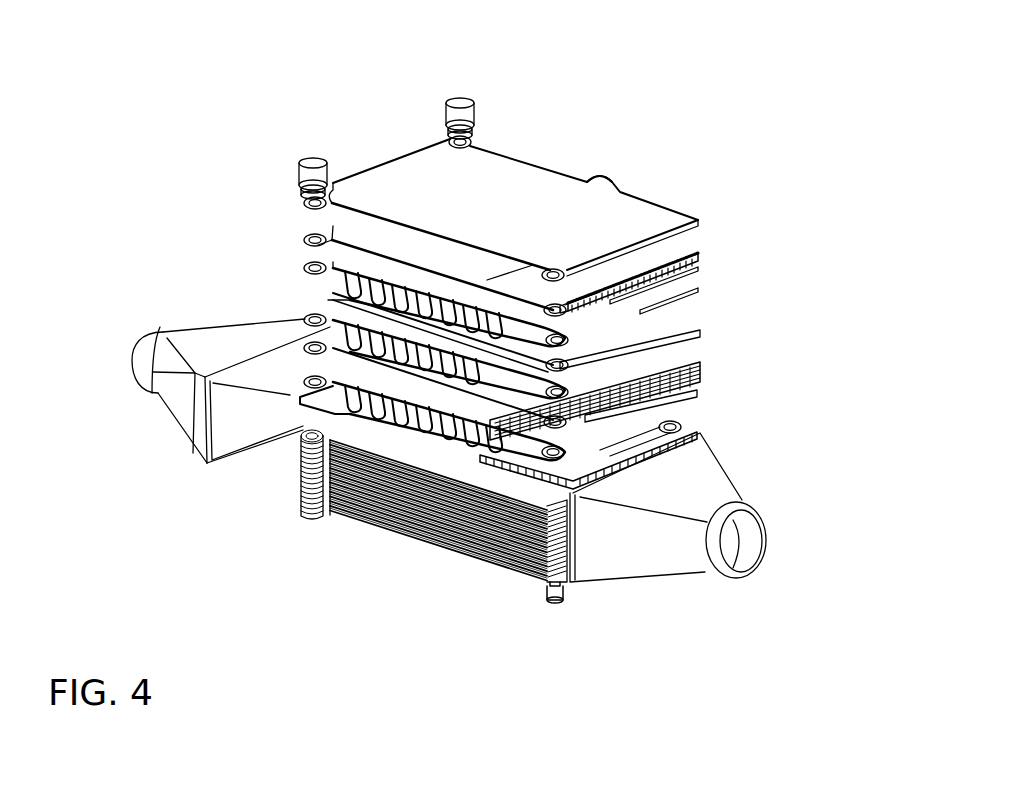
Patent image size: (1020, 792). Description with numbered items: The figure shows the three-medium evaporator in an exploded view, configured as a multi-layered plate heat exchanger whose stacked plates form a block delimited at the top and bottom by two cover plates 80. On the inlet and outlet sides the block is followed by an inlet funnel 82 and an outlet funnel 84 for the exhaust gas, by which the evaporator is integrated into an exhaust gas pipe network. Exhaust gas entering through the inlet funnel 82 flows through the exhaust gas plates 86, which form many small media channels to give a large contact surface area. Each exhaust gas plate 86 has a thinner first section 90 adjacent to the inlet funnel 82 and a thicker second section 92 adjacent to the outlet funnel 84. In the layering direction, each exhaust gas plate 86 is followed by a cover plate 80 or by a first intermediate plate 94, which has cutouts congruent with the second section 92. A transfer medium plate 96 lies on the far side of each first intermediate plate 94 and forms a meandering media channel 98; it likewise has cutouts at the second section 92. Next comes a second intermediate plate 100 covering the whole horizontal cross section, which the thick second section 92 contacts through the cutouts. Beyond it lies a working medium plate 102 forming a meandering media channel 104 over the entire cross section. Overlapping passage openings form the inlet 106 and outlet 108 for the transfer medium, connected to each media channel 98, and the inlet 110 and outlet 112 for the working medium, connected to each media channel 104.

The cover plate 80 is at (516, 190).
The inlet funnel 82 is at (196, 340).
The outlet funnel 84 is at (716, 495).
The exhaust gas plate 86 is at (700, 243).
The first section 90 is at (347, 223).
The second section 92 is at (662, 262).
The first intermediate plate 94 is at (318, 258).
The transfer medium plate 96 is at (315, 283).
The media channel 98 is at (312, 295).
The second intermediate plate 100 is at (683, 338).
The working medium plate 102 is at (688, 362).
The media channel 104 is at (348, 346).
The inlet 106 is at (607, 178).
The outlet 108 is at (318, 163).
The inlet 110 is at (553, 605).
The outlet 112 is at (458, 102).